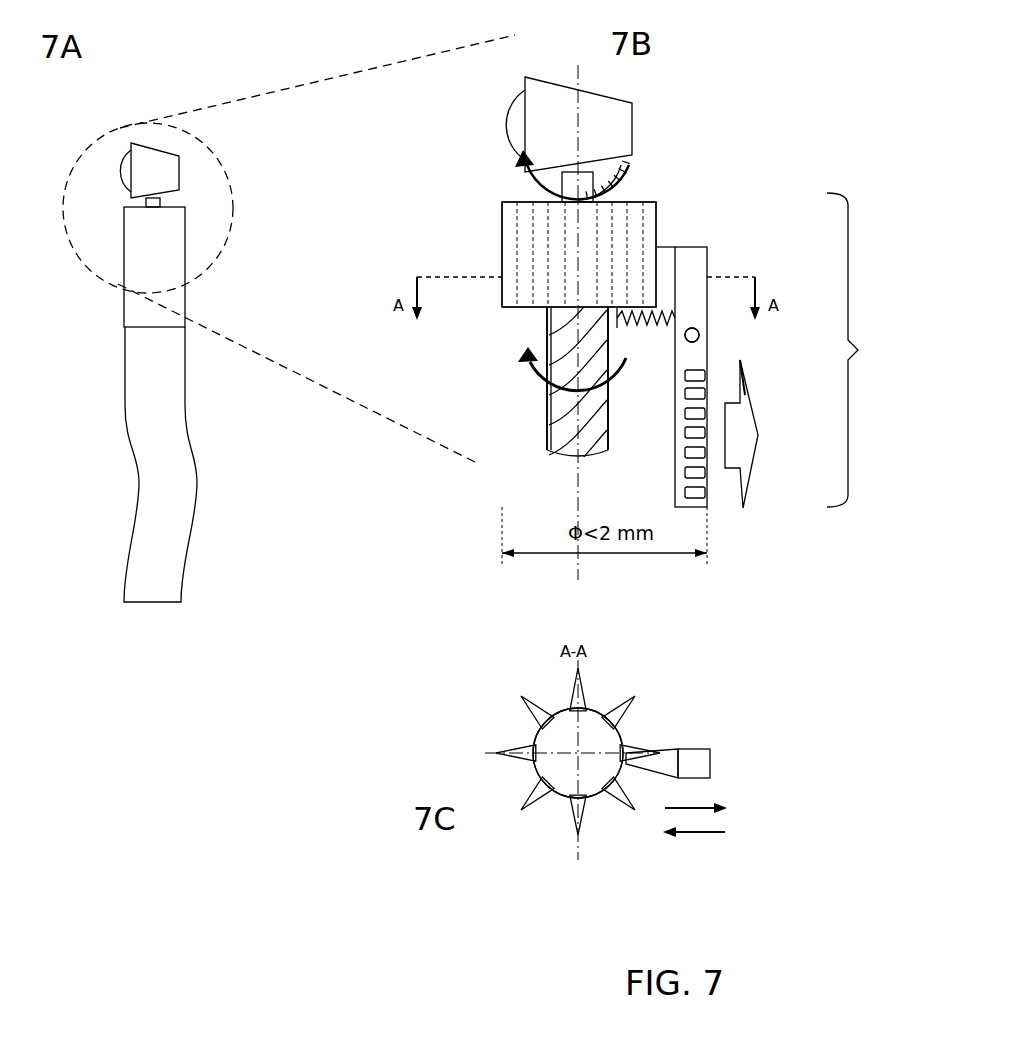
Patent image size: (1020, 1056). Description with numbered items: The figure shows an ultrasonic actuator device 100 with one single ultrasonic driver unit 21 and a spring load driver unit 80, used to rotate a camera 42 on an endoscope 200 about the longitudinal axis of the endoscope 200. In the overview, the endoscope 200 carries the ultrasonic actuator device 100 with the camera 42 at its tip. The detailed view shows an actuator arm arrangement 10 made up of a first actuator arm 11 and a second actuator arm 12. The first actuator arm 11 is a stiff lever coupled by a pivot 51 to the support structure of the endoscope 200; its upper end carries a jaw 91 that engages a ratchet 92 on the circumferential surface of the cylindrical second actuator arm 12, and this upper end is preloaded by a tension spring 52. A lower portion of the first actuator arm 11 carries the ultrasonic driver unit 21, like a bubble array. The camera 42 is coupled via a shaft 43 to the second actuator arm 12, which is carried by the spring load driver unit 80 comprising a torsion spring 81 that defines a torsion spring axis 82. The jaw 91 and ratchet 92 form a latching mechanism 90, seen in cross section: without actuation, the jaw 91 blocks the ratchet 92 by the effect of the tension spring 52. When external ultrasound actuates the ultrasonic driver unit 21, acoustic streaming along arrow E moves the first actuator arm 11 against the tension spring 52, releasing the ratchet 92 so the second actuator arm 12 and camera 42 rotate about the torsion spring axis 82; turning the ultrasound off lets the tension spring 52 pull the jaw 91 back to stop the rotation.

The actuator arm arrangement 10 is at (913, 367).
The first actuator arm 11 is at (698, 347).
The second actuator arm 12 is at (500, 240).
The ultrasonic driver unit 21 is at (707, 400).
The camera 42 is at (163, 173).
The shaft 43 is at (625, 172).
The pivot 51 is at (687, 338).
The tension spring 52 is at (668, 312).
The spring load driver unit 80 is at (530, 457).
The torsion spring 81 is at (590, 425).
The torsion spring axis 82 is at (575, 448).
The latching mechanism 90 is at (660, 690).
The jaw 91 is at (663, 260).
The ratchet 92 is at (628, 213).
The ultrasonic actuator device 100 is at (183, 231).
The endoscope 200 is at (182, 530).
The arrow E is at (742, 453).